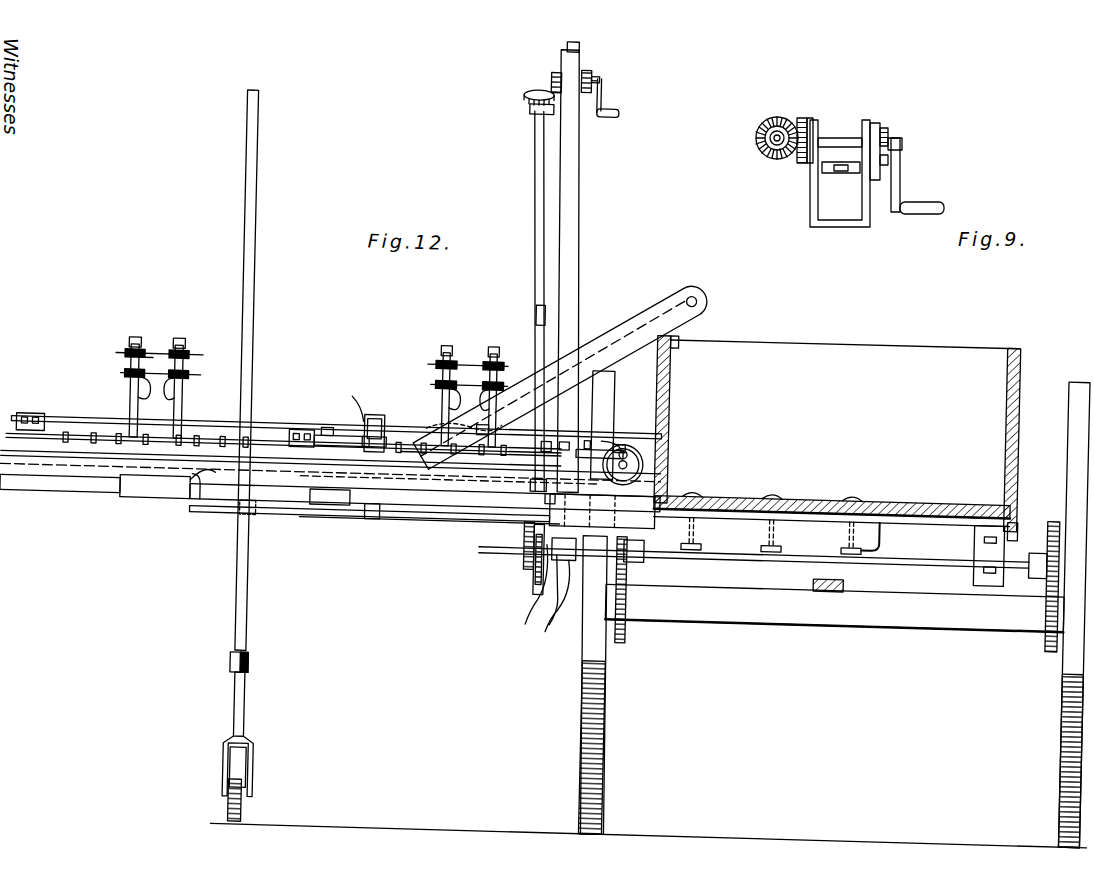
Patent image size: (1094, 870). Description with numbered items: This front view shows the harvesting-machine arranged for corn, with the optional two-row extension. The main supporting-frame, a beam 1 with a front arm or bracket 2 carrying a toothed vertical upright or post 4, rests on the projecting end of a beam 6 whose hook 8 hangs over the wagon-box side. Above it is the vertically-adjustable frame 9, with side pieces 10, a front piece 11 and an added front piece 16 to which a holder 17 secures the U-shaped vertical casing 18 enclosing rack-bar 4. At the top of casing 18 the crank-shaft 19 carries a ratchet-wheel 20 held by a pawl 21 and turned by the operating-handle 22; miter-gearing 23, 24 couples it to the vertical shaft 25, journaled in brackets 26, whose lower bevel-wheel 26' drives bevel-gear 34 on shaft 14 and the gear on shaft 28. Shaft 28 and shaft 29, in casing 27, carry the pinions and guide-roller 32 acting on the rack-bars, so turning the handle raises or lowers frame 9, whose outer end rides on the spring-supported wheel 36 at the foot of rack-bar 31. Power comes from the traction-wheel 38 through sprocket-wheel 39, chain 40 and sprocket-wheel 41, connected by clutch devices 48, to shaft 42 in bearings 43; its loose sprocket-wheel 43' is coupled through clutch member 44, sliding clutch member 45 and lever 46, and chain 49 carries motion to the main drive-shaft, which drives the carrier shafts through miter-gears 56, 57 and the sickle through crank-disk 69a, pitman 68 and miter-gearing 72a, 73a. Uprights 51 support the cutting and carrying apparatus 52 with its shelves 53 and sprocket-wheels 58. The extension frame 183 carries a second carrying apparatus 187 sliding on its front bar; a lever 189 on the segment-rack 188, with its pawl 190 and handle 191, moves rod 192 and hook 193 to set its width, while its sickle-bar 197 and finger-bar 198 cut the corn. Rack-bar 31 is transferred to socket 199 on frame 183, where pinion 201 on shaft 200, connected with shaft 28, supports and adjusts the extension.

In FIG. 12, the beam 1 is at (668, 480).
In FIG. 12, the laterally-extending arm or bracket 2 is at (602, 511).
In FIG. 12, the vertical upright or post (rack-bar) 4 is at (568, 52).
In FIG. 9, the vertical upright or post (rack-bar) 4 is at (841, 186).
In FIG. 12, the bar or beam 6 is at (722, 500).
In FIG. 12, the hook 8 is at (676, 342).
In FIG. 12, the vertically-adjustable frame 9 is at (395, 510).
In FIG. 12, the side piece 10 is at (530, 510).
In FIG. 12, the front piece 11 is at (370, 524).
In FIG. 12, the shaft 14 is at (525, 538).
In FIG. 12, the front piece 16 is at (345, 442).
In FIG. 12, the holder 17 is at (578, 440).
In FIG. 12, the vertical casing 18 is at (571, 215).
In FIG. 9, the vertical casing 18 is at (826, 228).
In FIG. 12, the crank-shaft 19 is at (592, 80).
In FIG. 9, the crank-shaft 19 is at (836, 138).
In FIG. 12, the ratchet-wheel 20 is at (592, 90).
In FIG. 9, the ratchet-wheel 20 is at (893, 138).
In FIG. 12, the pawl 21 is at (580, 70).
In FIG. 9, the pawl 21 is at (890, 162).
In FIG. 12, the operating-handle 22 is at (600, 116).
In FIG. 9, the operating-handle 22 is at (922, 215).
In FIG. 12, the miter-gear 23 is at (545, 73).
In FIG. 9, the miter-gear 23 is at (803, 118).
In FIG. 12, the miter-gear 24 is at (520, 94).
In FIG. 9, the miter-gear 24 is at (765, 157).
In FIG. 12, the vertical shaft 25 is at (527, 146).
In FIG. 9, the vertical shaft 25 is at (757, 139).
In FIG. 12, the bracket 26 is at (525, 112).
In FIG. 12, the bevel-wheel 26' is at (592, 514).
In FIG. 12, the casing 27 is at (450, 481).
In FIG. 12, the shaft 28 is at (429, 520).
In FIG. 12, the shaft 29 is at (351, 391).
In FIG. 12, the rack-bar 31 is at (249, 200).
In FIG. 12, the guide-roller 32 is at (372, 420).
In FIG. 12, the bevel-gear 34 is at (250, 712).
In FIG. 12, the wheel or caster 36 is at (235, 812).
In FIG. 12, the traction-wheel 38 is at (1066, 455).
In FIG. 12, the sprocket-wheel 39 is at (624, 640).
In FIG. 12, the chain 40 is at (1040, 596).
In FIG. 12, the sprocket-wheel 41 is at (1018, 512).
In FIG. 12, the shaft 42 is at (748, 556).
In FIG. 12, the bearing 43 is at (969, 556).
In FIG. 12, the sprocket-wheel 43' is at (514, 577).
In FIG. 12, the clutch member 44 is at (528, 594).
In FIG. 12, the sliding clutch member 45 is at (536, 609).
In FIG. 12, the lever 46 is at (556, 602).
In FIG. 12, the clutch device 48 is at (650, 552).
In FIG. 12, the chain 49 is at (524, 540).
In FIG. 12, the upright 51 is at (130, 352).
In FIG. 12, the cutting and carrying apparatus 52 is at (497, 336).
In FIG. 12, the horizontal shelf 53 is at (180, 372).
In FIG. 12, the miter-gear 56 is at (478, 458).
In FIG. 12, the miter-gear 57 is at (530, 462).
In FIG. 12, the sprocket-wheel 58 is at (140, 360).
In FIG. 12, the pitman 68 is at (619, 422).
In FIG. 12, the crank-disk 69a is at (640, 452).
In FIG. 12, the miter-gear 72a is at (640, 445).
In FIG. 12, the miter-gear 73a is at (608, 449).
In FIG. 12, the extension frame 183 is at (195, 432).
In FIG. 12, the carrying apparatus 187 is at (126, 390).
In FIG. 12, the segment-rack 188 is at (481, 406).
In FIG. 12, the lever 189 is at (530, 312).
In FIG. 12, the dog or pawl 190 is at (596, 424).
In FIG. 12, the handle 191 is at (542, 310).
In FIG. 12, the rod 192 is at (292, 512).
In FIG. 12, the hook 193 is at (205, 505).
In FIG. 12, the sickle-bar 197 is at (70, 446).
In FIG. 12, the finger-bar 198 is at (100, 466).
In FIG. 12, the socket 199 is at (242, 524).
In FIG. 12, the shaft 200 is at (325, 512).
In FIG. 12, the pinion 201 is at (218, 492).